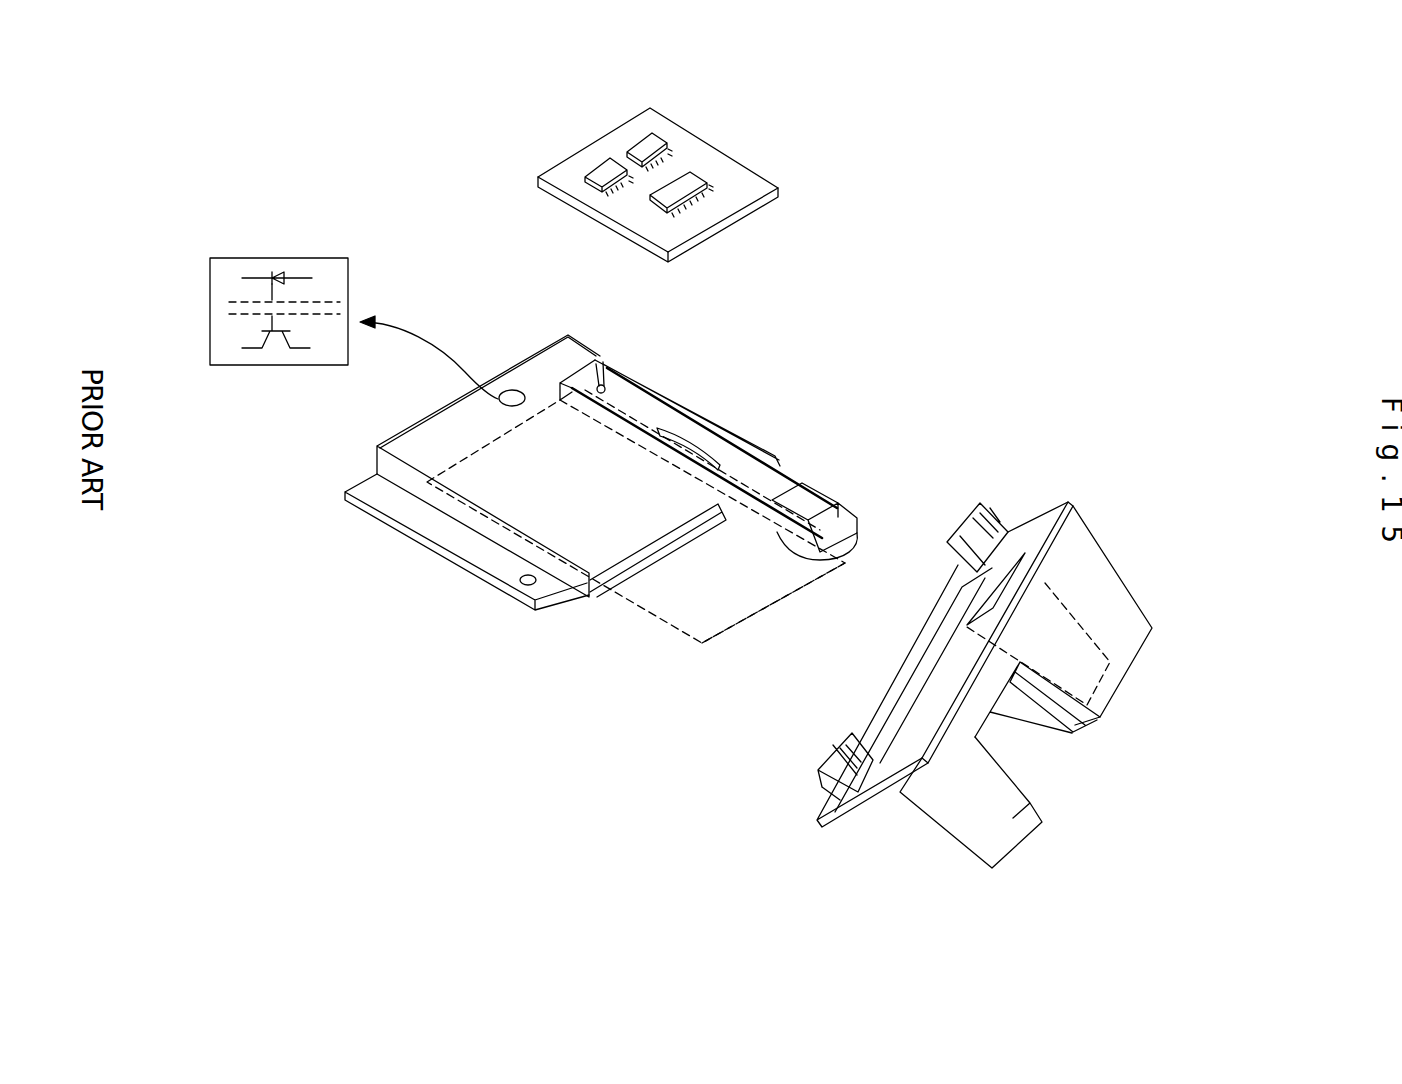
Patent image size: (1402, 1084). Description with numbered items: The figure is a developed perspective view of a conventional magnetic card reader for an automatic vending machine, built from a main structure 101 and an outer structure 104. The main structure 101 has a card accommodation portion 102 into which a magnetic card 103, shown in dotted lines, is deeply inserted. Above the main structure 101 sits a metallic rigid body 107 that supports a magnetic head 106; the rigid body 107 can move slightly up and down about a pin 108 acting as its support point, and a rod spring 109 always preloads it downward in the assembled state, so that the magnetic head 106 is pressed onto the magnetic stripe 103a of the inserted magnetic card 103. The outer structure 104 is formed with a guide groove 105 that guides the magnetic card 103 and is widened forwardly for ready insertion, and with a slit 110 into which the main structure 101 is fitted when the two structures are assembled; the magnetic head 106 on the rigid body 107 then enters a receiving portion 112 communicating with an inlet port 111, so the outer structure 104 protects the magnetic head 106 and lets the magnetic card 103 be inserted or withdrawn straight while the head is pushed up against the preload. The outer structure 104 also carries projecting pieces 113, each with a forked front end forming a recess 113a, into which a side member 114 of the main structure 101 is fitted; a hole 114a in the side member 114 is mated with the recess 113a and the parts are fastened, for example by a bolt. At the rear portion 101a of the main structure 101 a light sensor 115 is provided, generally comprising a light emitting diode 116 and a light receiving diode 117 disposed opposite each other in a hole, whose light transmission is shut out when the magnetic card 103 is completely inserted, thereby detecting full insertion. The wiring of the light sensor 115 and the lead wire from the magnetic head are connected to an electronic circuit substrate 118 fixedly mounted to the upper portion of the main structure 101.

The main structure 101 is at (575, 597).
The rear portion 101a is at (523, 370).
The card accommodation portion 102 is at (640, 577).
The magnetic card 103 is at (322, 300).
The magnetic stripe 103a is at (746, 528).
The outer structure 104 is at (1017, 814).
The guide groove 105 is at (1077, 725).
The magnetic head 106 is at (870, 525).
The metallic rigid body 107 is at (795, 480).
The pin 108 is at (601, 380).
The rod spring 109 is at (702, 447).
The slit 110 is at (881, 716).
The inlet port 111 is at (995, 590).
The receiving portion 112 is at (1050, 635).
The projecting piece 113 is at (838, 787).
The recess 113a is at (845, 760).
The side member 114 is at (442, 549).
The hole 114a is at (527, 578).
The light sensor 115 is at (500, 398).
The light emitting diode 116 is at (269, 270).
The light receiving diode 117 is at (252, 352).
The electronic circuit substrate 118 is at (718, 166).